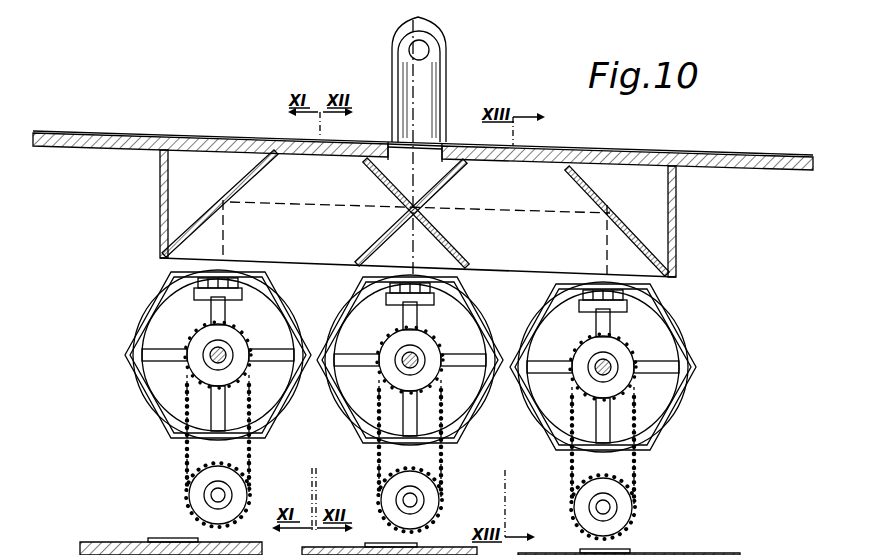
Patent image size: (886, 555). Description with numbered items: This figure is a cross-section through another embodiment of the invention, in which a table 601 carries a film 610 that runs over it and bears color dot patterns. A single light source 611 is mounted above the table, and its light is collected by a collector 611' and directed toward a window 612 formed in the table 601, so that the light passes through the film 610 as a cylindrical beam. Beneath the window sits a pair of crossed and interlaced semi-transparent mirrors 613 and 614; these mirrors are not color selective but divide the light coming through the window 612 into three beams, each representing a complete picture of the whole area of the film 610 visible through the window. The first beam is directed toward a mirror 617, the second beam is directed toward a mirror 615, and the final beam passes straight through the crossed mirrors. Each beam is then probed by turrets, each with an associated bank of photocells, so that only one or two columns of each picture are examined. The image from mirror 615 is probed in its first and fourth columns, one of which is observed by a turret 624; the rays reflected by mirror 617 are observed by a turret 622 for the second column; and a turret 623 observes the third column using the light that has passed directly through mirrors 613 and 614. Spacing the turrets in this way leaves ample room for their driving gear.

The table 601 is at (102, 150).
The film 610 is at (150, 133).
The light source 611 is at (393, 86).
The collector 611' is at (448, 79).
The window 612 is at (442, 152).
The semi-transparent mirror 613 is at (447, 228).
The semi-transparent mirror 614 is at (385, 238).
The mirror 615 is at (201, 213).
The mirror 617 is at (635, 230).
The turret 622 is at (682, 400).
The turret 623 is at (346, 410).
The turret 624 is at (135, 383).